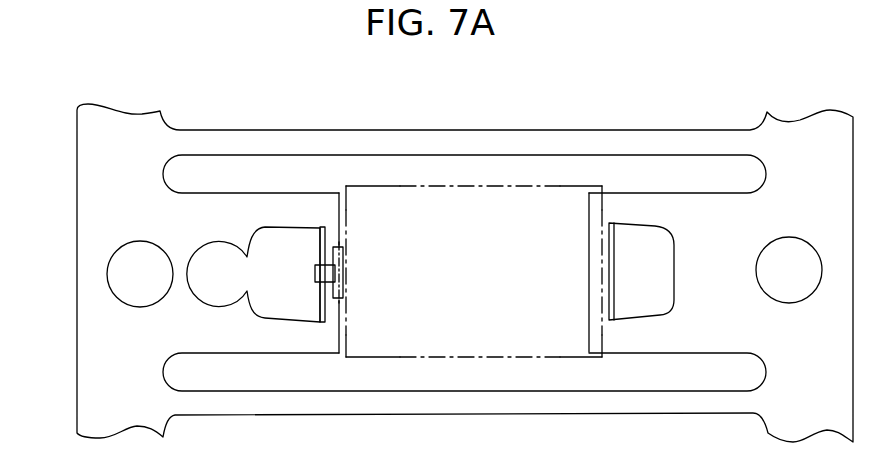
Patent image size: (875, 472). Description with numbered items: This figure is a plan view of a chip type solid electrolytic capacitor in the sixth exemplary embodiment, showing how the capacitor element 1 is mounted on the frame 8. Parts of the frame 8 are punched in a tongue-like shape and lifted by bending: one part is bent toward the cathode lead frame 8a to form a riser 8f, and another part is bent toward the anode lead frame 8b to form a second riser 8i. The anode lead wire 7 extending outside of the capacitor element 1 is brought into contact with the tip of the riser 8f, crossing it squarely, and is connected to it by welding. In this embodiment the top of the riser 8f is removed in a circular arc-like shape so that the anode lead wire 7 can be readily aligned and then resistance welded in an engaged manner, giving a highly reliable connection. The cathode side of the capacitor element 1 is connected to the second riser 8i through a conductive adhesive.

The frame 8 is at (818, 147).
The anode lead frame 8b is at (258, 208).
The riser 8f is at (323, 227).
The anode lead wire 7 is at (328, 268).
The capacitor element 1 is at (458, 205).
The cathode lead frame 8a is at (673, 207).
The second riser 8i is at (613, 222).